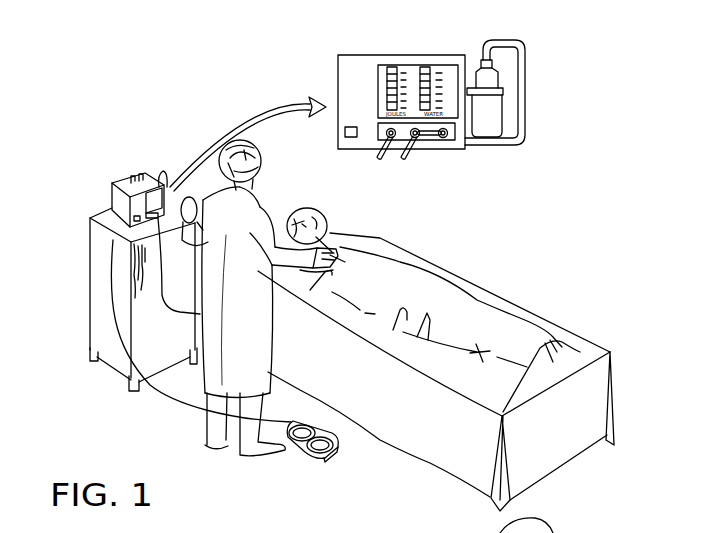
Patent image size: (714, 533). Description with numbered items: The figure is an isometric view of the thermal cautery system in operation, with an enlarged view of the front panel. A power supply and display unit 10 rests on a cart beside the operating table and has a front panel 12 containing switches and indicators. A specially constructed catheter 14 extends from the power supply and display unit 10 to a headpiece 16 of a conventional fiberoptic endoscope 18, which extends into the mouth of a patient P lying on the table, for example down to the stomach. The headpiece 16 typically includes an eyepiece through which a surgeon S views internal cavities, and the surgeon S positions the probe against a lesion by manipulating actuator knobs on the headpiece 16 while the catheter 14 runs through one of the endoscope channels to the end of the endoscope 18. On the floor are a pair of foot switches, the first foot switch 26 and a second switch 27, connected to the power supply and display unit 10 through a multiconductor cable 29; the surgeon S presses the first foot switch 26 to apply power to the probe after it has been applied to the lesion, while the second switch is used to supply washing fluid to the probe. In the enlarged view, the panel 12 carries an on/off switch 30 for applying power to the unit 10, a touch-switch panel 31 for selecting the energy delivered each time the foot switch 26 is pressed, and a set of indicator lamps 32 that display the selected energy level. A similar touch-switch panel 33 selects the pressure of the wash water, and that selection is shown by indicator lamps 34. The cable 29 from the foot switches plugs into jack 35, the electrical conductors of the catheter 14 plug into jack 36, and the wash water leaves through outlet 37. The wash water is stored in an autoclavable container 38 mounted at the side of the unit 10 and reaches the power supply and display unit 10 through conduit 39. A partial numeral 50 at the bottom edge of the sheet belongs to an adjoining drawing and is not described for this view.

The power supply and display unit 10 is at (332, 50).
The front panel 12 is at (377, 80).
The catheter 14 is at (403, 160).
The headpiece 16 is at (340, 231).
The fiberoptic endoscope 18 is at (296, 225).
The first foot switch 26 is at (291, 447).
The foot pedal 27 is at (319, 458).
The multiconductor cable 29 is at (390, 160).
The on/off switch 30 is at (351, 124).
The touch-switch panel 31 is at (391, 67).
The indicator lamps 32 is at (403, 72).
The touch-switch panel 33 is at (428, 67).
The indicator lamps 34 is at (440, 72).
The jack 35 is at (378, 145).
The jack 36 is at (419, 138).
The outlet 37 is at (444, 139).
The autoclavable container 38 is at (497, 107).
The conduit 39 is at (525, 135).
The handpiece (partial, next figure) 50 is at (478, 529).
The surgeon S is at (259, 207).
The patient P is at (385, 240).